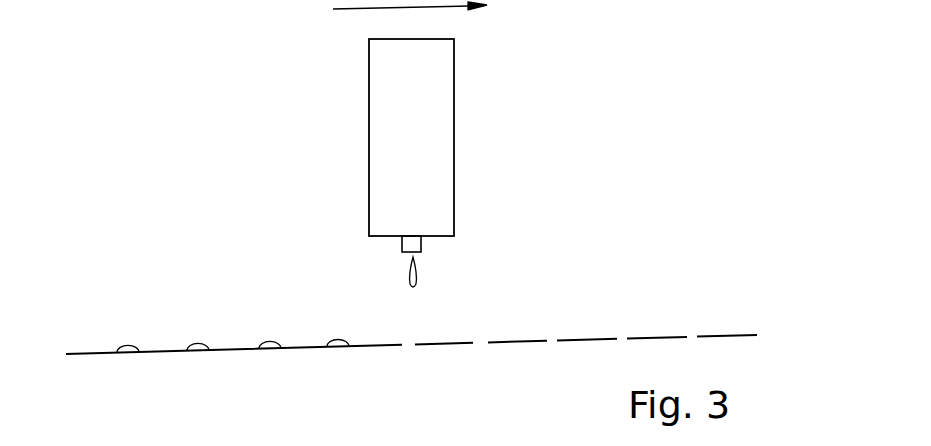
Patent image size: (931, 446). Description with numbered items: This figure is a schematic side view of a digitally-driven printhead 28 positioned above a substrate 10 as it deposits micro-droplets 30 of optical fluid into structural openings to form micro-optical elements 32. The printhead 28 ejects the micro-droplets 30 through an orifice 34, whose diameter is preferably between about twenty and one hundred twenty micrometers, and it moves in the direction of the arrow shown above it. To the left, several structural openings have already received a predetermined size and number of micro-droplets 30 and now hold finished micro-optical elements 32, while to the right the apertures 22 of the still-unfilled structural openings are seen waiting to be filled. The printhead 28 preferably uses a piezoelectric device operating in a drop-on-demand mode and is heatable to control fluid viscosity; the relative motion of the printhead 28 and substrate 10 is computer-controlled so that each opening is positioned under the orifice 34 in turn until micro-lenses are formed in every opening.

The substrate 10 is at (778, 328).
The aperture 22 is at (410, 345).
The digitally-driven printhead 28 is at (454, 92).
The micro-droplet 30 is at (403, 283).
The micro-optical element 32 is at (122, 345).
The orifice 34 is at (417, 255).